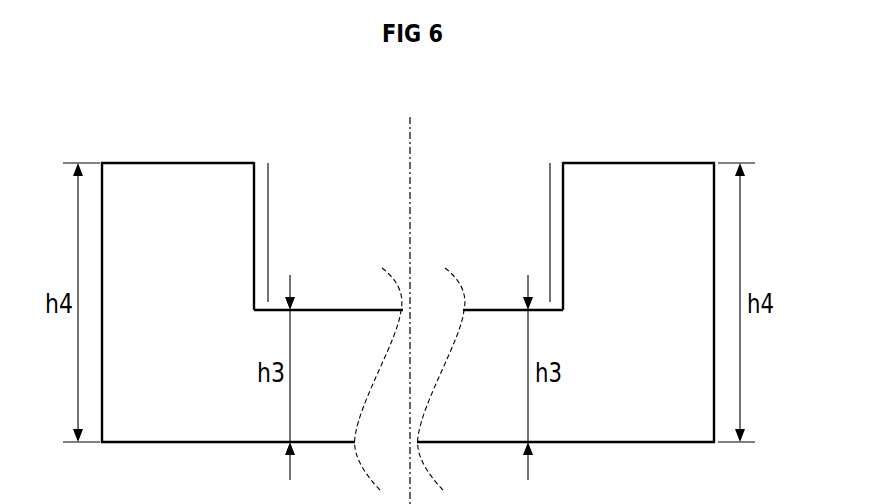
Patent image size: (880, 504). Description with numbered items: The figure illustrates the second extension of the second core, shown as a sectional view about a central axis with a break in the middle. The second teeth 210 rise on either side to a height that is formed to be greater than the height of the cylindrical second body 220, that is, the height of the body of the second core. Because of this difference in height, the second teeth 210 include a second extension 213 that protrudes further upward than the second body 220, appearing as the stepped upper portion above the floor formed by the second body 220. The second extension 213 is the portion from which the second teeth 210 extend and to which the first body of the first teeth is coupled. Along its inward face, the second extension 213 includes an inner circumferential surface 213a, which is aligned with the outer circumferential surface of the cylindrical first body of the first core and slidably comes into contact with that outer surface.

The second teeth 210 is at (152, 161).
The second extension 213 is at (269, 233).
The inner circumferential surface 213a is at (258, 171).
The second body 220 is at (336, 308).